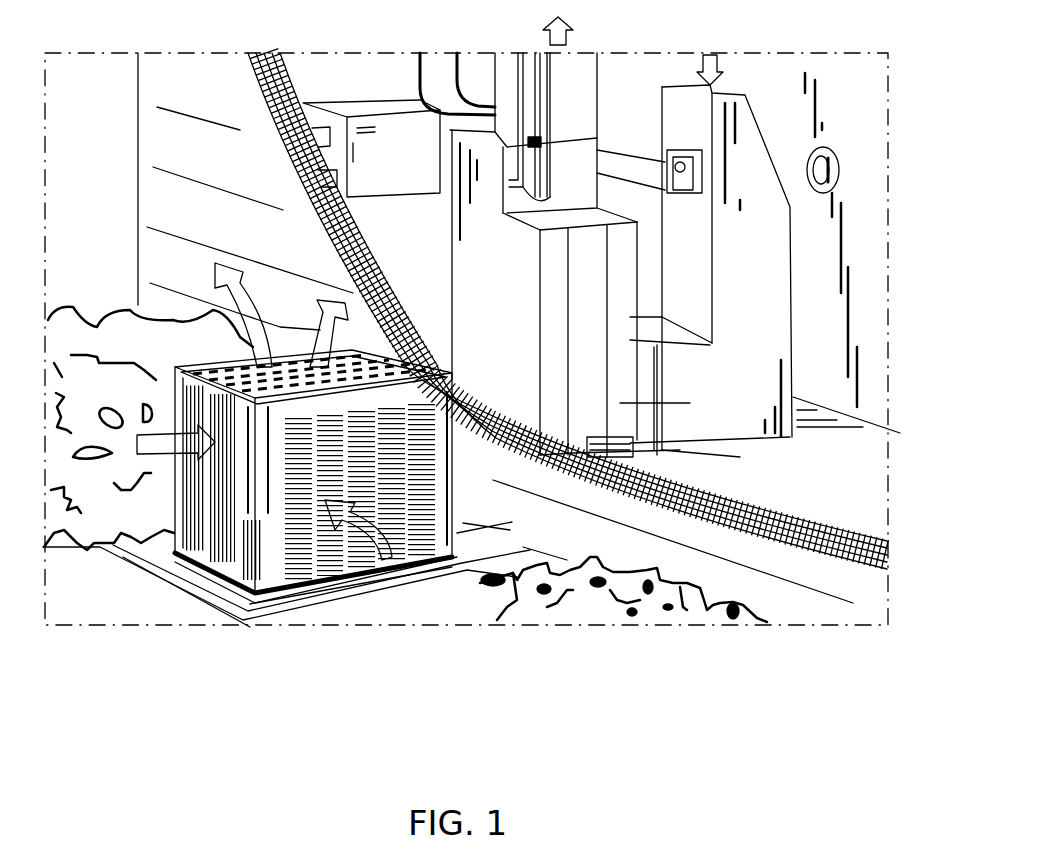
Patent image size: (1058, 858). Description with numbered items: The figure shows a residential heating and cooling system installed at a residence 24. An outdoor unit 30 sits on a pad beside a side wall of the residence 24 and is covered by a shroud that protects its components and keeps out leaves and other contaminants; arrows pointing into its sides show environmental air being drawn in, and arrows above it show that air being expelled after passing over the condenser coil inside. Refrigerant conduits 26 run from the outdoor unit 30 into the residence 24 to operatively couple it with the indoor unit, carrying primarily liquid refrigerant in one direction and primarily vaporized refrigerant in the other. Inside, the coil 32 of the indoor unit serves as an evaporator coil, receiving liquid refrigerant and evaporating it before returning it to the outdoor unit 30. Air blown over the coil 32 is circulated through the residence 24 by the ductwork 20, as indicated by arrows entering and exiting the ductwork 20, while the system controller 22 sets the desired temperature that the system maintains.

The ductwork 20 is at (770, 302).
The system controller 22 is at (840, 161).
The residence 24 is at (207, 77).
The refrigerant conduits 26 is at (477, 550).
The outdoor unit 30 is at (247, 550).
The coil 32 is at (577, 163).